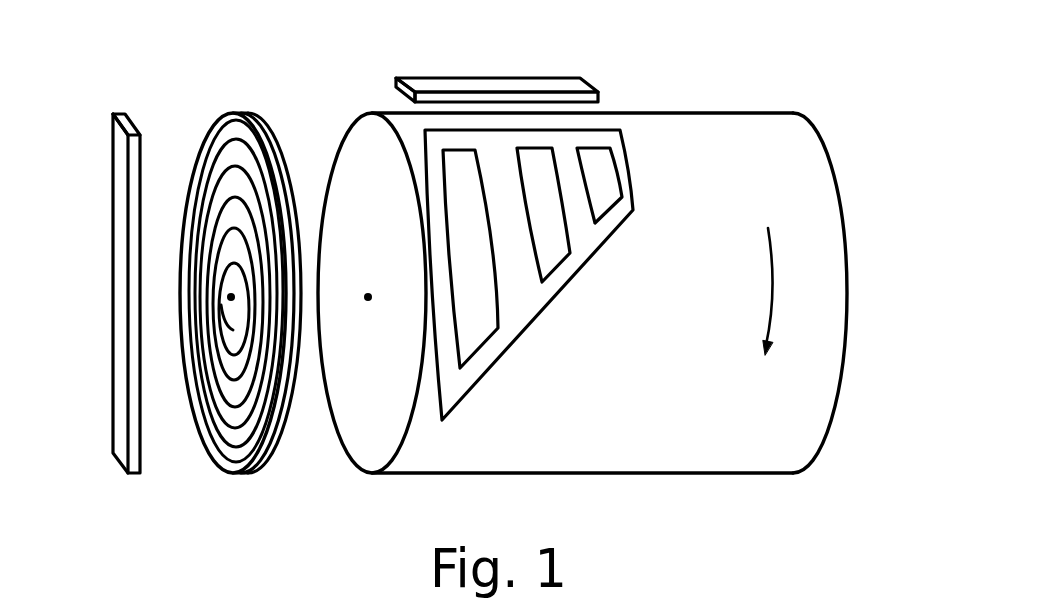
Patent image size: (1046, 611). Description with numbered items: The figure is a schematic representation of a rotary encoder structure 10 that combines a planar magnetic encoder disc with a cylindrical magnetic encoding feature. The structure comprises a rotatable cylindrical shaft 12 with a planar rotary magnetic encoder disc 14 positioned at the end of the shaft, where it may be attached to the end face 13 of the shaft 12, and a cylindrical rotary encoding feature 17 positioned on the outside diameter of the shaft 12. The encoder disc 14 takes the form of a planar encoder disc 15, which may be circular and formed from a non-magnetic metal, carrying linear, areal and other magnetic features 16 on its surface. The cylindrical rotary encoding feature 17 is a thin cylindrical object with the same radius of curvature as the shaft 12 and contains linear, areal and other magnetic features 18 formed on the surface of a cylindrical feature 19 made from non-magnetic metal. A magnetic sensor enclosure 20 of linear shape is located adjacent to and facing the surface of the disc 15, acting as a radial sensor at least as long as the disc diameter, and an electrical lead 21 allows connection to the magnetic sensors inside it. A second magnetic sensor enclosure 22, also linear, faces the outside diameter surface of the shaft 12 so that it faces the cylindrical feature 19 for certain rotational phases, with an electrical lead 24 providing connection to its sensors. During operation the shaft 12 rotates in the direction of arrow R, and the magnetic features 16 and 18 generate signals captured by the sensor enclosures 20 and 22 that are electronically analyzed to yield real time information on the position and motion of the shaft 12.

The rotary encoder structure 10 is at (856, 88).
The shaft 12 is at (730, 418).
The end face 13 is at (376, 430).
The planar rotary magnetic encoder disc 14 is at (180, 113).
The planar encoder disc 15 is at (227, 440).
The magnetic features 16 is at (228, 137).
The cylindrical rotary encoding feature 17 is at (652, 150).
The magnetic features 18 is at (497, 283).
The cylindrical feature 19 is at (567, 260).
The magnetic sensor enclosure 20 is at (122, 310).
The electrical lead 21 is at (122, 452).
The magnetic sensor enclosure 22 is at (488, 85).
The electrical lead 24 is at (562, 82).
The arrow R is at (773, 280).